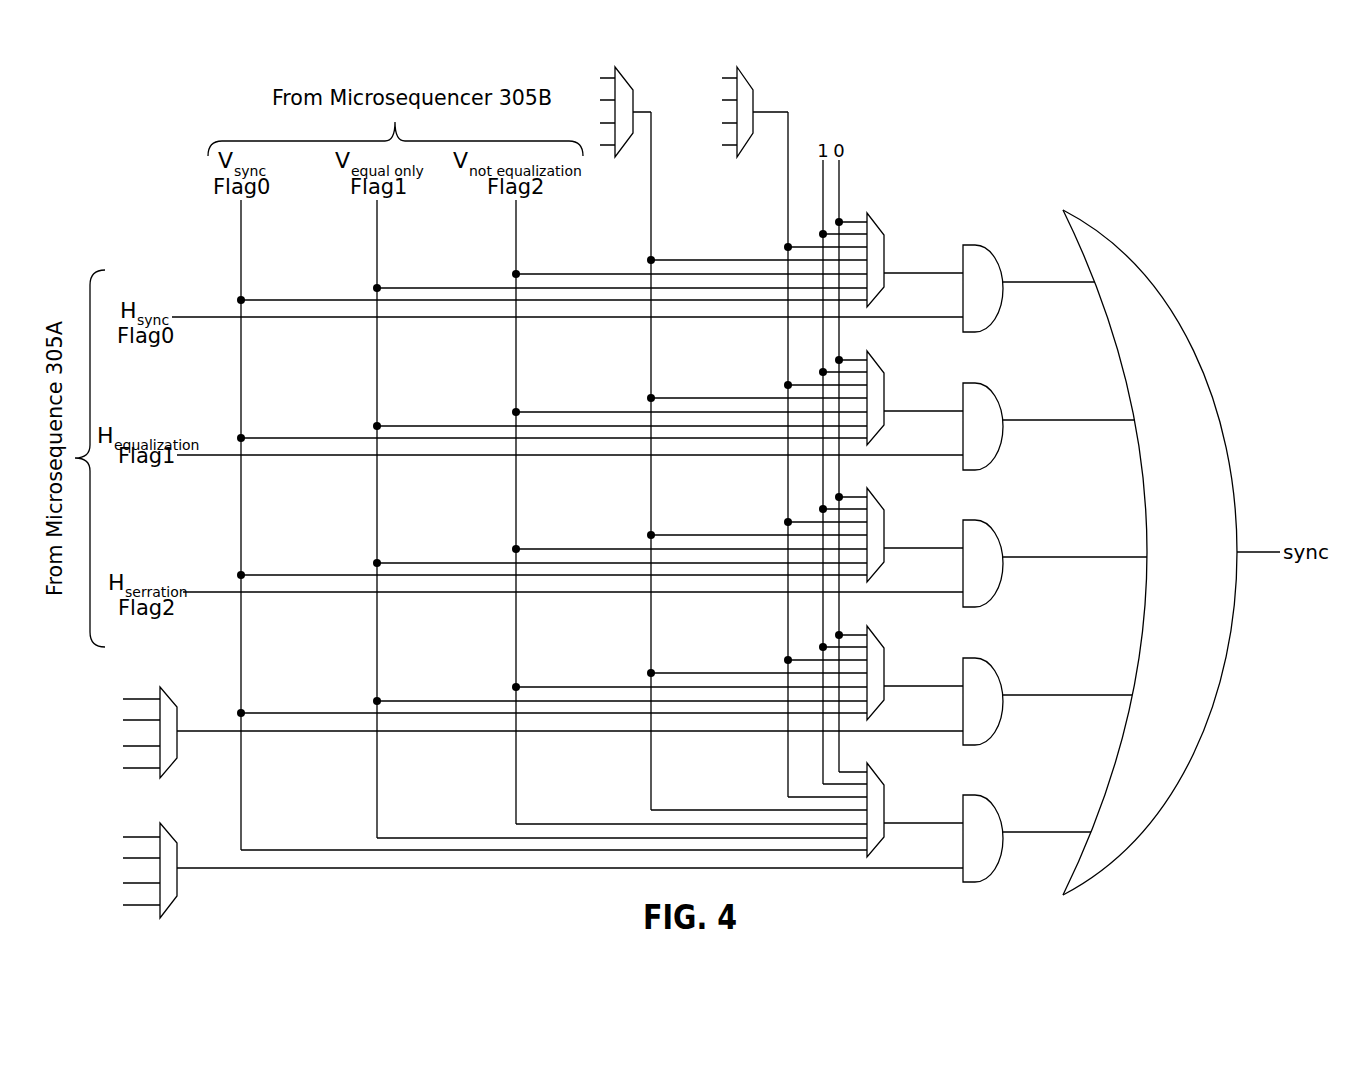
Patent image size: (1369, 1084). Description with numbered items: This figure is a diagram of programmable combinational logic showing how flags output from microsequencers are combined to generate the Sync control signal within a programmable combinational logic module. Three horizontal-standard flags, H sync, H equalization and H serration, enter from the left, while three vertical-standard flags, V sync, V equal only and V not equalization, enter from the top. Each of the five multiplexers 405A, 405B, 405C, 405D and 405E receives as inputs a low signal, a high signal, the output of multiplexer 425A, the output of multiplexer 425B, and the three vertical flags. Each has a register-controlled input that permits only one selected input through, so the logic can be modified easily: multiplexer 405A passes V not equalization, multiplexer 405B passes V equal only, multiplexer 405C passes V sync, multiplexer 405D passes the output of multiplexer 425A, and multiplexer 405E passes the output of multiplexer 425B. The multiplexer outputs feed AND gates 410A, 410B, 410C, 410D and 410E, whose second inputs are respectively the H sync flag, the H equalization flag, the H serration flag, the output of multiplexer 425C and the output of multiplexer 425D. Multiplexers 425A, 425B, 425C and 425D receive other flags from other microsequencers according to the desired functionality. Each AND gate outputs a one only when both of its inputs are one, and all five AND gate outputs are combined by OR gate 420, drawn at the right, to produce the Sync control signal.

The multiplexer 405A is at (884, 232).
The multiplexer 405B is at (884, 370).
The multiplexer 405C is at (884, 507).
The multiplexer 405D is at (884, 645).
The multiplexer 405E is at (884, 782).
The AND gate 410A is at (978, 246).
The AND gate 410B is at (978, 384).
The AND gate 410C is at (978, 521).
The AND gate 410D is at (978, 659).
The AND gate 410E is at (978, 796).
The OR gate 420 is at (1165, 318).
The multiplexer 425A is at (755, 100).
The multiplexer 425B is at (635, 100).
The multiplexer 425C is at (177, 706).
The multiplexer 425D is at (177, 844).